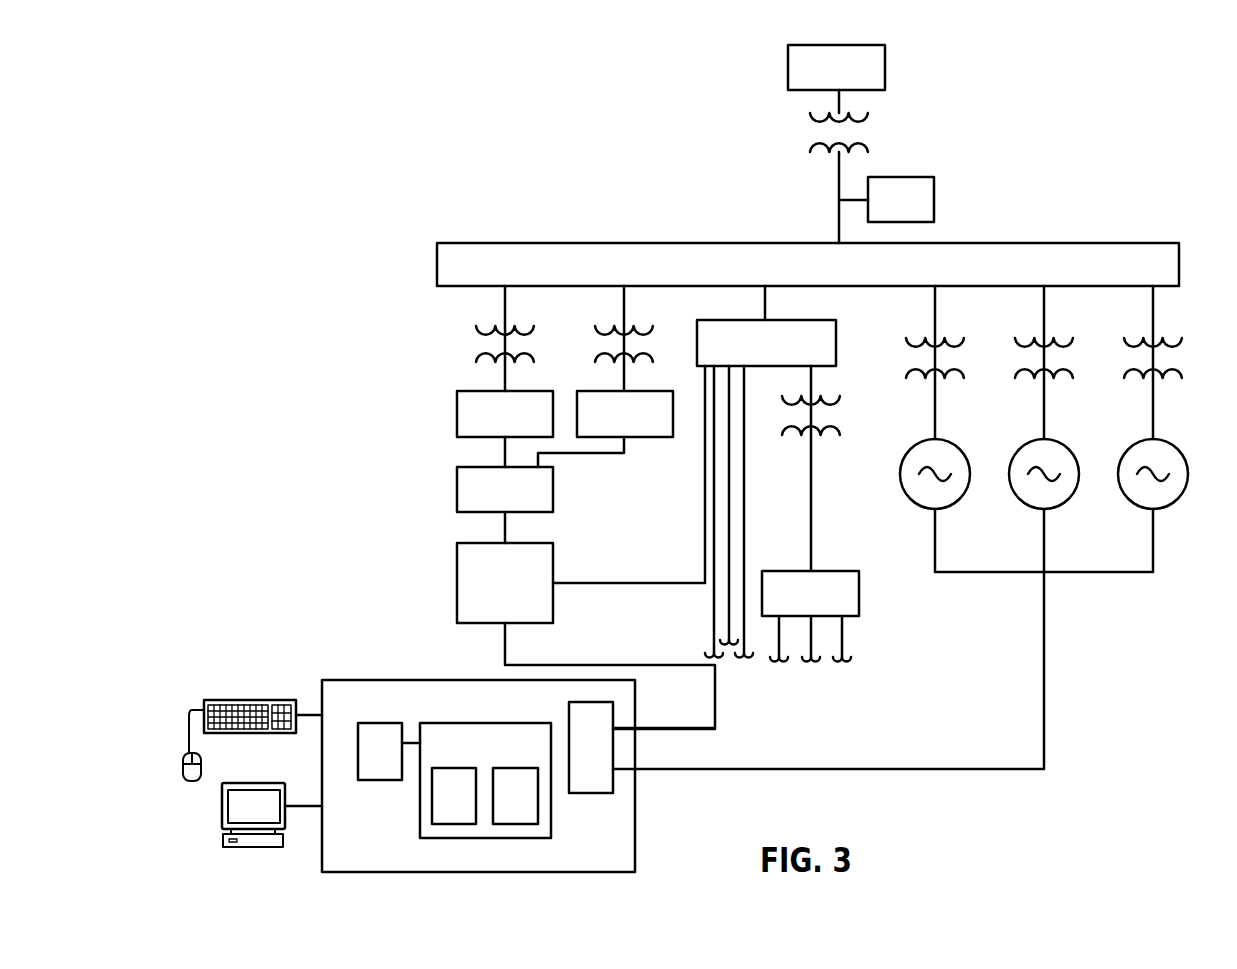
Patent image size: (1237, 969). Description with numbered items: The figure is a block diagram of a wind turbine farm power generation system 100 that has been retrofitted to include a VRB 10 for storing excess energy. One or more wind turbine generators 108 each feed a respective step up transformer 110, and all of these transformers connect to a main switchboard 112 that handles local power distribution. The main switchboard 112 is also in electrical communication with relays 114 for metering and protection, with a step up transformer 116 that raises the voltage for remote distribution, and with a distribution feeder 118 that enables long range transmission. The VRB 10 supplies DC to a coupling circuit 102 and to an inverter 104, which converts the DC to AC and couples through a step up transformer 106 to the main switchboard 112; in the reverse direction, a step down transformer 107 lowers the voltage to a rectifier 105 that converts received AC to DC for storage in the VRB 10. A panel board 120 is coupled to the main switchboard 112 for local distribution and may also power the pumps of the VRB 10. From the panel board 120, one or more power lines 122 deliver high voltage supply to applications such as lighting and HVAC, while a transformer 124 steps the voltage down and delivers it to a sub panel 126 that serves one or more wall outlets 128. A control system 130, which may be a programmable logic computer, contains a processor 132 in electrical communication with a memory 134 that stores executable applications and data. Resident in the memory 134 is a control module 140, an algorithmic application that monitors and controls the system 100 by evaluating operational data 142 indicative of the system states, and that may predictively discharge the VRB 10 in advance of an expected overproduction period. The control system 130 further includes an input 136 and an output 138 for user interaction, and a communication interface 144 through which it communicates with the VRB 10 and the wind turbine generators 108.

The power generation system 100 is at (328, 125).
The VRB 10 is at (493, 595).
The coupling circuit 102 is at (488, 502).
The inverter 104 is at (488, 426).
The rectifier 105 is at (607, 426).
The step up transformer 106 is at (532, 345).
The step down transformer 107 is at (642, 334).
The wind turbine generators 108 is at (958, 500).
The step up transformer 110 is at (955, 343).
The main switchboard 112 is at (822, 277).
The relays 114 is at (884, 212).
The step up transformer 116 is at (812, 131).
The distribution feeder 118 is at (820, 79).
The panel board 120 is at (749, 355).
The power lines 122 is at (746, 594).
The transformer 124 is at (842, 413).
The sub panel 126 is at (794, 606).
The wall outlets 128 is at (779, 648).
The control system 130 is at (451, 709).
The processor 132 is at (363, 759).
The memory 134 is at (468, 754).
The input 136 is at (237, 700).
The output 138 is at (238, 783).
The control module 140 is at (437, 806).
The operational data 142 is at (498, 806).
The communication interface 144 is at (574, 759).